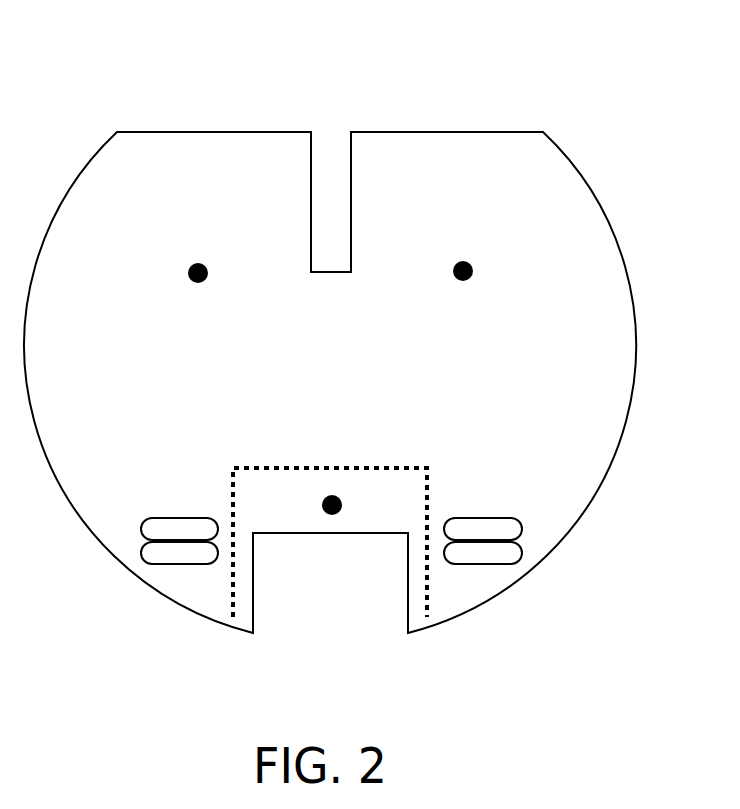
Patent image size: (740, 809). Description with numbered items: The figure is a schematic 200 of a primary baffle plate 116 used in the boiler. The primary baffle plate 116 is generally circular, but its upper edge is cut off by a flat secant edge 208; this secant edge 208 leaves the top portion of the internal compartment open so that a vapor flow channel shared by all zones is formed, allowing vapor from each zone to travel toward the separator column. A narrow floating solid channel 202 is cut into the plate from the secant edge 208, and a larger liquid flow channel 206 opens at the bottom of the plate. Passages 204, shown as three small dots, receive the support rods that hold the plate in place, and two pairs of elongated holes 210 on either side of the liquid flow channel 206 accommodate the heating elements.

The primary baffle plate 116 is at (583, 180).
The schematic 200 is at (281, 90).
The floating solid channel 202 is at (335, 272).
The passages 204 is at (197, 285).
The liquid flow channel 206 is at (337, 613).
The secant edge 208 is at (425, 132).
The holes 210 is at (180, 564).